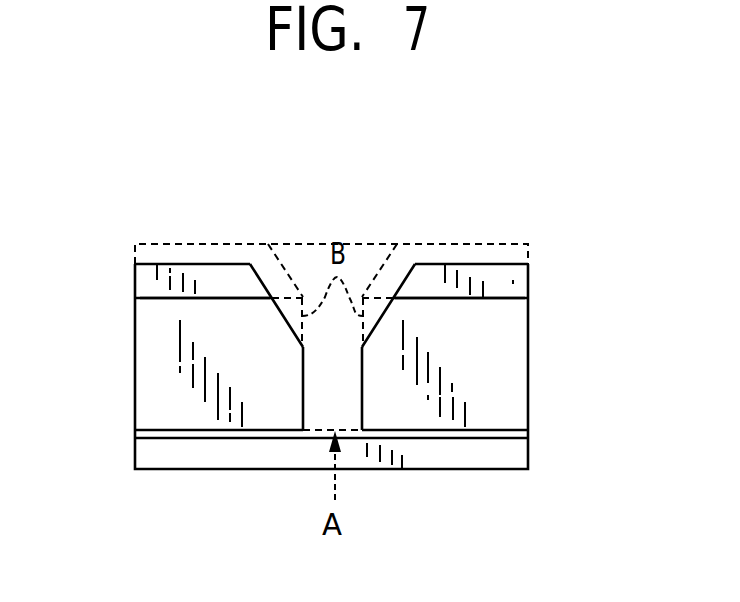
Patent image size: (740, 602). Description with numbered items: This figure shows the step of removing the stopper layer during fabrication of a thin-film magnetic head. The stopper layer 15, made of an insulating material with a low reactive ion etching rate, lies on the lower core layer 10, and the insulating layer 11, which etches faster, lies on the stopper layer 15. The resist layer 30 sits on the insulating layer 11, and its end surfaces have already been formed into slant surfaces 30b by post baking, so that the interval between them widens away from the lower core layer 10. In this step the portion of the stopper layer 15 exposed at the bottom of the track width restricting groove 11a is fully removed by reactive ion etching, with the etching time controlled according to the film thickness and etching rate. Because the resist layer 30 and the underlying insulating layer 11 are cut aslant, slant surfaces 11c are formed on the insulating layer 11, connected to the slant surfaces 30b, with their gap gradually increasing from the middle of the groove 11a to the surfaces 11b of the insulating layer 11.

The lower core layer 10 is at (513, 455).
The insulating layer 11 is at (165, 373).
The track width restricting groove 11a is at (320, 392).
The surfaces of the insulating layer 11b is at (215, 297).
The slant surfaces 11c is at (295, 287).
The stopper layer 15 is at (177, 433).
The resist layer 30 is at (157, 283).
The slant surfaces 30b is at (268, 250).